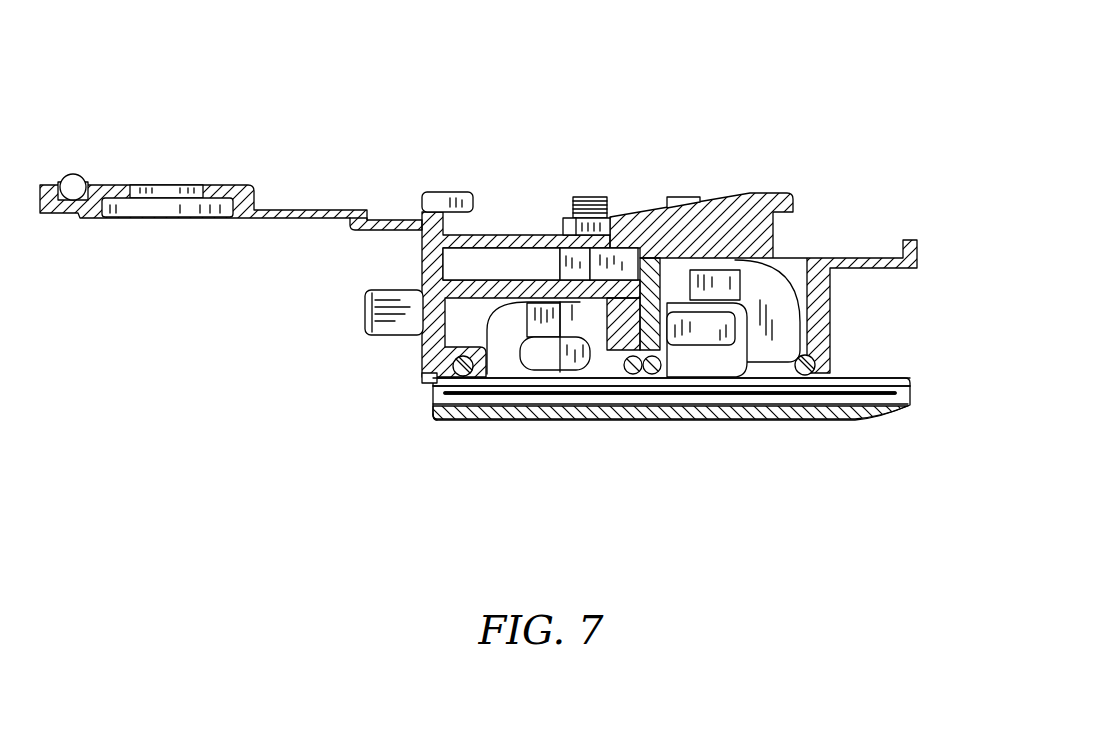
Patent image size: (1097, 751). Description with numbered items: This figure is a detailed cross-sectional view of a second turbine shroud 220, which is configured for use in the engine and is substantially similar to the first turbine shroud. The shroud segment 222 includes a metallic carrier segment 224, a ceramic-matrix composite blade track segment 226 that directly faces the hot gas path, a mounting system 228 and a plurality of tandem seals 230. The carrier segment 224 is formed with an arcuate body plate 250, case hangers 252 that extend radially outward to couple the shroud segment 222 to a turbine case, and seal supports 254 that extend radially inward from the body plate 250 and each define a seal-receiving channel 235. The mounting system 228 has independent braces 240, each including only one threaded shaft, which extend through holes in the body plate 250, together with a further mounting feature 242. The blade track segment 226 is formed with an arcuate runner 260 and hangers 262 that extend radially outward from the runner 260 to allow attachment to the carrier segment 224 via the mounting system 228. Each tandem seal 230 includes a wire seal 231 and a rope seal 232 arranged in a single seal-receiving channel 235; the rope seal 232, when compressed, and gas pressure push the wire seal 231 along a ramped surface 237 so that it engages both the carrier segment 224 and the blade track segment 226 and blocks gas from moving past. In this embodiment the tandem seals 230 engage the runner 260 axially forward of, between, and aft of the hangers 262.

The turbine shroud 220 is at (184, 90).
The shroud segment 222 is at (195, 158).
The carrier segment 224 is at (363, 205).
The blade track segment 226 is at (821, 430).
The mounting system 228 is at (583, 192).
The tandem seal 230 is at (432, 422).
The wire seal 231 is at (423, 380).
The rope seal 232 is at (504, 382).
The seal-receiving channel 235 is at (468, 392).
The ramped surface 237 is at (447, 367).
The brace 240 is at (660, 268).
The mounting system feature 242 is at (562, 218).
The body plate 250 is at (502, 232).
The case hanger 252 is at (433, 190).
The seal support 254 is at (465, 312).
The runner 260 is at (432, 419).
The hanger 262 is at (483, 332).